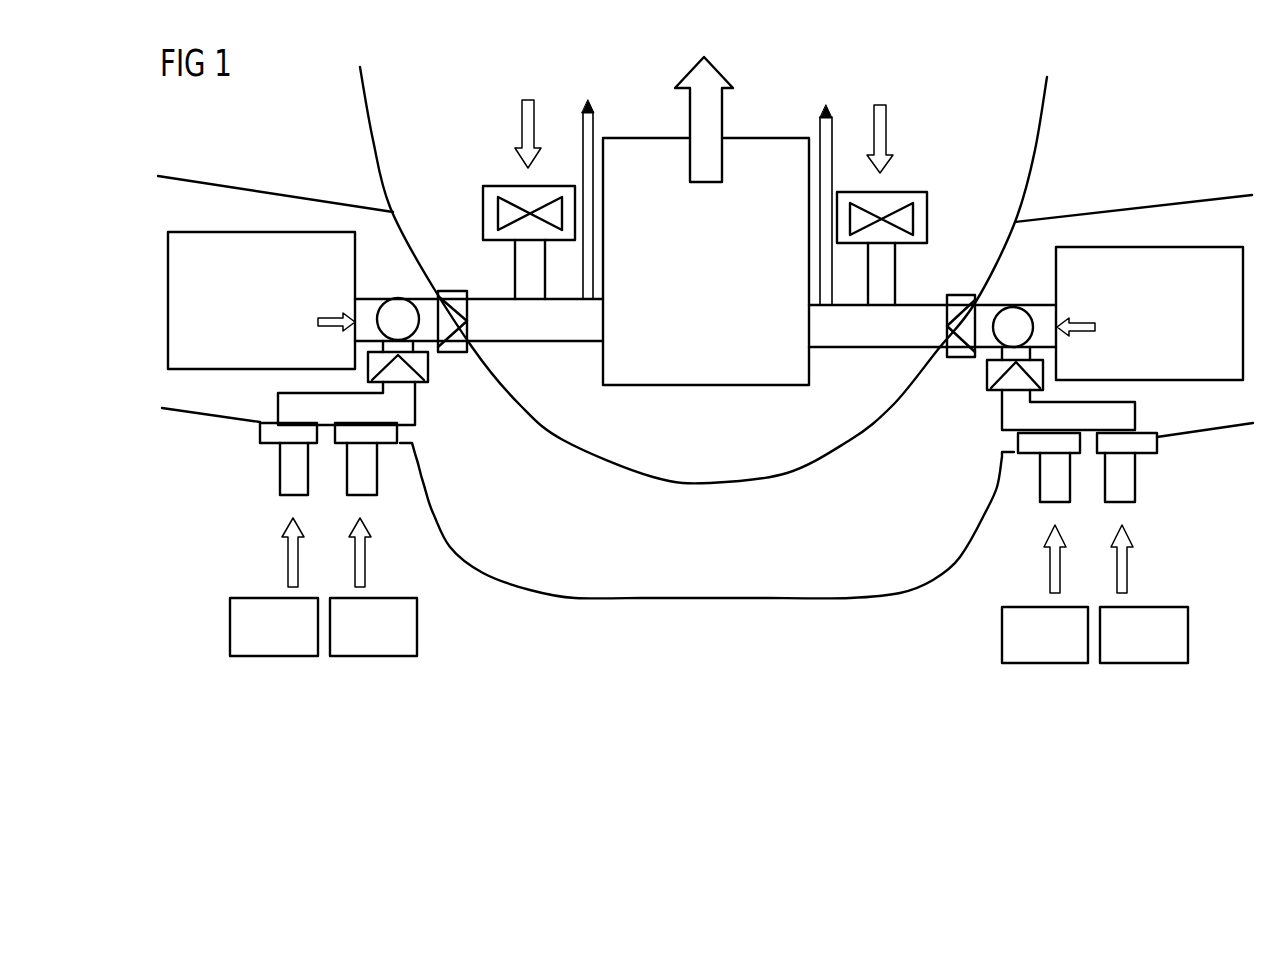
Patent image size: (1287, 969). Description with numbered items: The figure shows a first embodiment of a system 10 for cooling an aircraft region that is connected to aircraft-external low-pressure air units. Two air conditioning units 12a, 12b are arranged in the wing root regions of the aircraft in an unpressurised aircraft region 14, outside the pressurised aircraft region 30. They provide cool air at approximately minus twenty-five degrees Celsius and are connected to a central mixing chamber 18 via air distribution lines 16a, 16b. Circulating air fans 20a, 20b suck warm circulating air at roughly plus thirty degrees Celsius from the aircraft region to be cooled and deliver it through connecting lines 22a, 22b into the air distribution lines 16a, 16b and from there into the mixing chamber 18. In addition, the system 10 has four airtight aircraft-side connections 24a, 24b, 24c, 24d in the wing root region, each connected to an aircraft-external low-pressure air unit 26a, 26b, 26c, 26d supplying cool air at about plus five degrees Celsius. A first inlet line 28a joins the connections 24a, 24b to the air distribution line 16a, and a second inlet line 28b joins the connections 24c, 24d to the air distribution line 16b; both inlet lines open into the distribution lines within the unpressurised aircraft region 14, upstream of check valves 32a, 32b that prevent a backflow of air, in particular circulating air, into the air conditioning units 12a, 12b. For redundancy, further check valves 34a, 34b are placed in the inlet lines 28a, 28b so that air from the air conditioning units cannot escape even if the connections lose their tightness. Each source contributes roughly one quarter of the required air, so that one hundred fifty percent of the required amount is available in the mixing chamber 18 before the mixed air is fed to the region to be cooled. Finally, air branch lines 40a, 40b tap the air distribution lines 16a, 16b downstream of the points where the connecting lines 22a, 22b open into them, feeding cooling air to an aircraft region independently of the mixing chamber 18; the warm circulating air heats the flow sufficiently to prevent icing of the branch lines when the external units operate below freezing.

The system for cooling an aircraft region 10 is at (1058, 168).
The air conditioning unit 12a is at (190, 234).
The air conditioning unit 12b is at (1220, 258).
The unpressurised aircraft region 14 is at (722, 560).
The air distribution line 16a is at (562, 333).
The air distribution line 16b is at (858, 337).
The mixing chamber 18 is at (750, 148).
The circulating air fan 20a is at (500, 197).
The circulating air fan 20b is at (917, 203).
The connecting line 22a is at (527, 278).
The connecting line 22b is at (882, 278).
The aircraft-side connection 24a is at (267, 443).
The aircraft-side connection 24b is at (383, 443).
The aircraft-side connection 24c is at (1030, 447).
The aircraft-side connection 24d is at (1152, 453).
The aircraft-external low-pressure air unit 26a is at (230, 628).
The aircraft-external low-pressure air unit 26b is at (417, 630).
The aircraft-external low-pressure air unit 26c is at (1002, 637).
The aircraft-external low-pressure air unit 26d is at (1188, 637).
The first inlet line 28a is at (403, 413).
The second inlet line 28b is at (1005, 418).
The pressurised aircraft region 30 is at (722, 448).
The check valve 32a is at (458, 290).
The check valve 32b is at (953, 297).
The check valve 34a is at (428, 368).
The check valve 34b is at (987, 373).
The air branch line 40a is at (595, 119).
The air branch line 40b is at (820, 127).